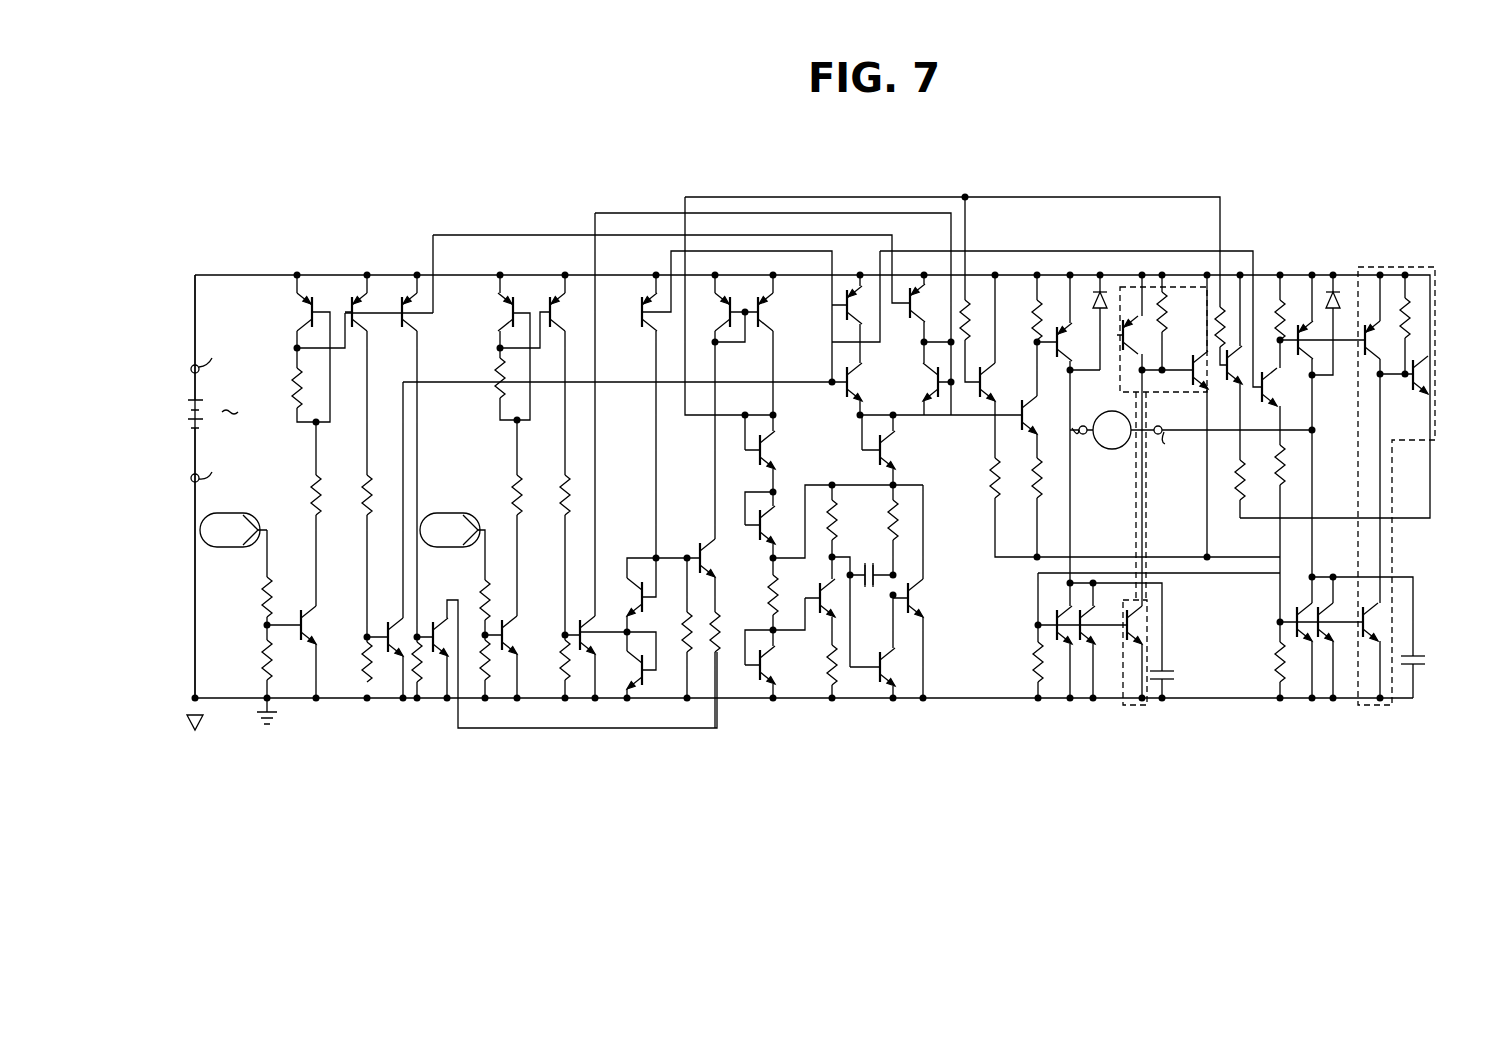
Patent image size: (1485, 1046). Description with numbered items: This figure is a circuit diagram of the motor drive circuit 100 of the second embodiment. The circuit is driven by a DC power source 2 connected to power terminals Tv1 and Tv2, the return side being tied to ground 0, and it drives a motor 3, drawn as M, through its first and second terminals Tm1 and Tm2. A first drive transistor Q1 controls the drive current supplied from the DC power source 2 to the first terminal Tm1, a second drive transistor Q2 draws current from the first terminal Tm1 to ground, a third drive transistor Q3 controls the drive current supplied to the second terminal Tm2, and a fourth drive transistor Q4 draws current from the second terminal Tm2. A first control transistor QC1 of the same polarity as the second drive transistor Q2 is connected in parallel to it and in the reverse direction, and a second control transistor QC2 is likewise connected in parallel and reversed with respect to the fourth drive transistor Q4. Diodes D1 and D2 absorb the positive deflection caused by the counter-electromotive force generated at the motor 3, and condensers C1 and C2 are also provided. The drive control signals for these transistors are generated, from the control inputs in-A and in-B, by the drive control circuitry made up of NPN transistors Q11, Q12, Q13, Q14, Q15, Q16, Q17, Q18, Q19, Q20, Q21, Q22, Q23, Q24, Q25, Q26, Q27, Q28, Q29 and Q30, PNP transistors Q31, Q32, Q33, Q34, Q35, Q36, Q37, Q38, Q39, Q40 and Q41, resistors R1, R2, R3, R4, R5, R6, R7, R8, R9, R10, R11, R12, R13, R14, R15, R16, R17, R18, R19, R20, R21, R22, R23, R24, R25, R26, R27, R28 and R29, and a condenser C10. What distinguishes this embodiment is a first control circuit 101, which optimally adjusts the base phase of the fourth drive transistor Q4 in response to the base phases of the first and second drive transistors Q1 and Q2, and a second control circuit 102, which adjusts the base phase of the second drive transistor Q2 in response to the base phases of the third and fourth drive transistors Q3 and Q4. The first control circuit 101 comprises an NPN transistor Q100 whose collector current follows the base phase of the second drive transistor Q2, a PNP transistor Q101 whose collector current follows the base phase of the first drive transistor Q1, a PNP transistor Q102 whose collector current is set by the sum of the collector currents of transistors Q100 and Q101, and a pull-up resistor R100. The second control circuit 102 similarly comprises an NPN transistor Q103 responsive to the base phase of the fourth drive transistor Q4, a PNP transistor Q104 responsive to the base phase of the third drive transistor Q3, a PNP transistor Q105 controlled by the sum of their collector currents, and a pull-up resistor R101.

The motor drive circuit 100 is at (378, 210).
The first control circuit 101 is at (1133, 706).
The second control circuit 102 is at (1368, 706).
The DC power source 2 is at (223, 398).
The motor 3 is at (1110, 396).
The ground 0 is at (209, 740).
The power terminal Tv1 is at (232, 354).
The power terminal Tv2 is at (232, 467).
The first terminal of the motor Tm1 is at (1091, 472).
The second terminal of the motor Tm2 is at (1163, 472).
The motor M is at (1112, 430).
The input A in-A is at (230, 530).
The input B in-B is at (450, 530).
The first drive transistor Q1 is at (1061, 333).
The second drive transistor Q2 is at (1056, 617).
The third drive transistor Q3 is at (1301, 330).
The fourth drive transistor Q4 is at (1298, 615).
The NPN transistor Q11 is at (327, 625).
The NPN transistor Q12 is at (388, 625).
The NPN transistor Q13 is at (440, 620).
The NPN transistor Q14 is at (527, 635).
The NPN transistor Q15 is at (600, 634).
The NPN transistor Q16 is at (622, 597).
The NPN transistor Q17 is at (620, 670).
The NPN transistor Q18 is at (696, 551).
The NPN transistor Q19 is at (784, 450).
The NPN transistor Q20 is at (751, 509).
The NPN transistor Q21 is at (751, 670).
The NPN transistor Q22 is at (810, 595).
The NPN transistor Q23 is at (902, 667).
The NPN transistor Q24 is at (869, 382).
The NPN transistor Q25 is at (918, 382).
The NPN transistor Q26 is at (905, 450).
The NPN transistor Q27 is at (1045, 415).
The NPN transistor Q28 is at (1004, 382).
The NPN transistor Q29 is at (1285, 387).
The NPN transistor Q30 is at (1248, 371).
The PNP transistor Q31 is at (288, 312).
The PNP transistor Q32 is at (377, 325).
The PNP transistor Q33 is at (428, 314).
The PNP transistor Q34 is at (486, 312).
The PNP transistor Q35 is at (542, 306).
The PNP transistor Q36 is at (636, 323).
The PNP transistor Q37 is at (709, 312).
The PNP transistor Q38 is at (780, 312).
The PNP transistor Q39 is at (838, 314).
The PNP transistor Q40 is at (930, 303).
The PNP transistor Q41 is at (934, 598).
The NPN transistor Q100 is at (1140, 620).
The PNP transistor Q101 is at (1152, 336).
The PNP transistor Q102 is at (1224, 383).
The NPN transistor Q103 is at (1387, 622).
The PNP transistor Q104 is at (1391, 340).
The PNP transistor Q105 is at (1418, 378).
The first control transistor QC1 is at (1101, 625).
The second control transistor QC2 is at (1342, 615).
The resistor R1 is at (280, 597).
The resistor R2 is at (291, 660).
The resistor R3 is at (284, 388).
The resistor R4 is at (327, 495).
The resistor R5 is at (354, 489).
The resistor R6 is at (355, 662).
The resistor R7 is at (428, 662).
The resistor R8 is at (495, 600).
The resistor R9 is at (494, 660).
The resistor R10 is at (483, 381).
The resistor R11 is at (500, 495).
The resistor R12 is at (548, 495).
The resistor R13 is at (548, 661).
The resistor R14 is at (676, 642).
The resistor R15 is at (704, 624).
The resistor R16 is at (756, 595).
The resistor R17 is at (850, 520).
The resistor R18 is at (815, 665).
The resistor R19 is at (899, 522).
The resistor R20 is at (1019, 320).
The resistor R21 is at (1021, 487).
The resistor R22 is at (976, 478).
The resistor R23 is at (1265, 315).
The resistor R24 is at (1255, 485).
The resistor R25 is at (1295, 465).
The resistor R26 is at (1019, 662).
The resistor R27 is at (1263, 662).
The resistor R28 is at (980, 329).
The resistor R29 is at (1236, 327).
The pull-up resistor R100 is at (1182, 312).
The pull-up resistor R101 is at (1410, 322).
The diode D1 is at (1092, 312).
The diode D2 is at (1347, 302).
The condenser C1 is at (1174, 675).
The condenser C2 is at (1425, 664).
The condenser C10 is at (869, 588).